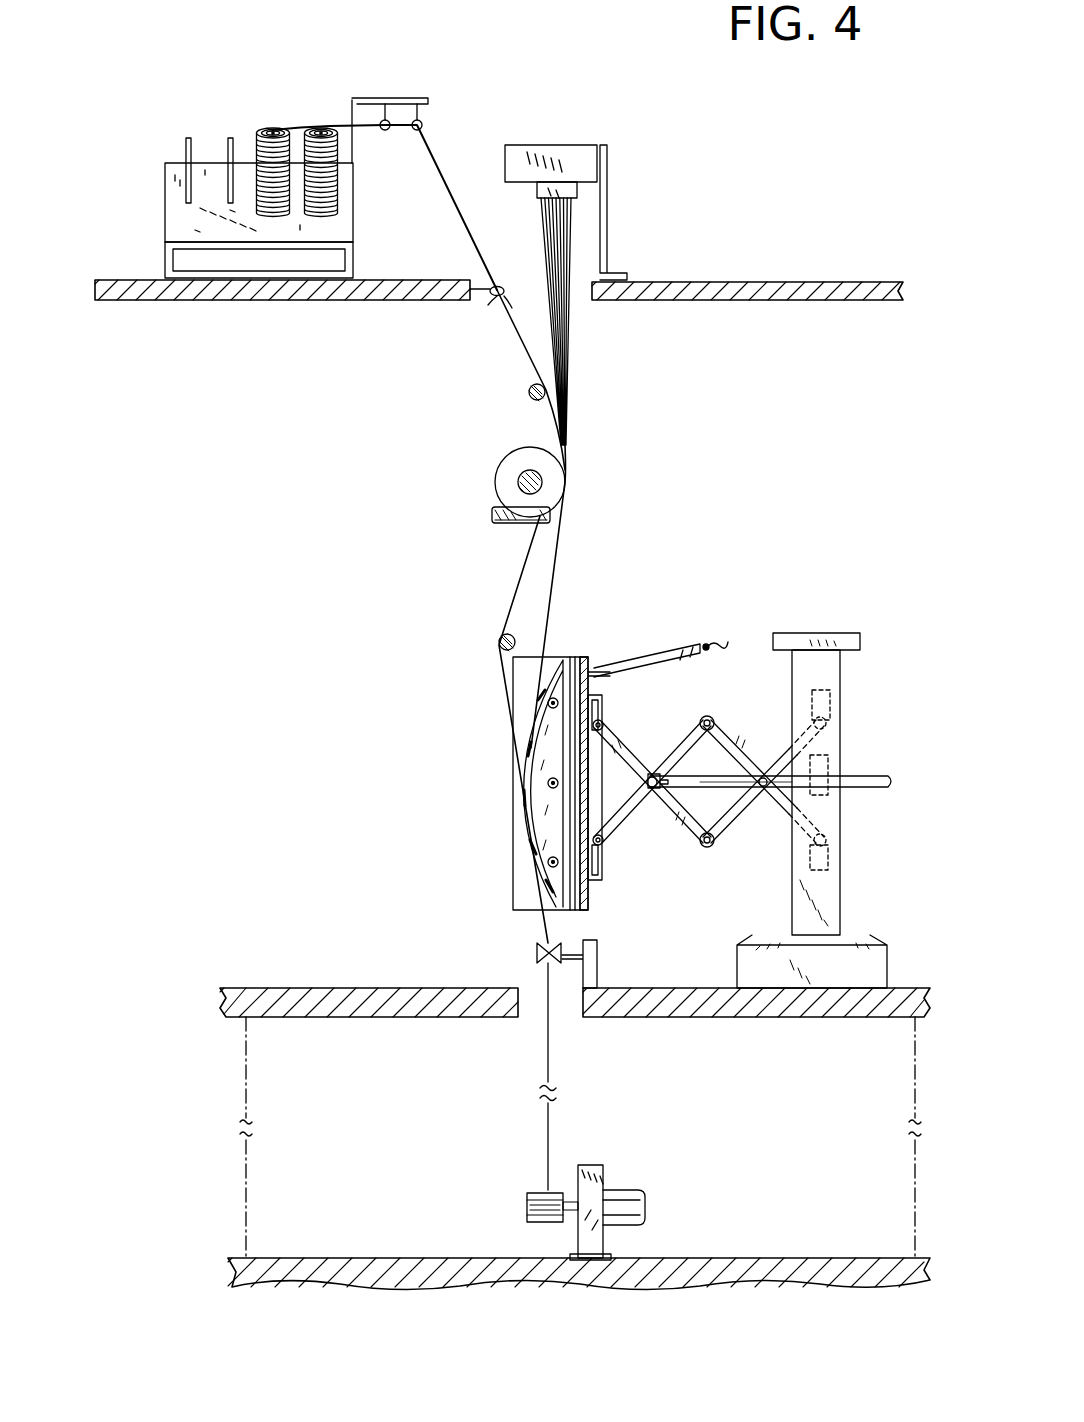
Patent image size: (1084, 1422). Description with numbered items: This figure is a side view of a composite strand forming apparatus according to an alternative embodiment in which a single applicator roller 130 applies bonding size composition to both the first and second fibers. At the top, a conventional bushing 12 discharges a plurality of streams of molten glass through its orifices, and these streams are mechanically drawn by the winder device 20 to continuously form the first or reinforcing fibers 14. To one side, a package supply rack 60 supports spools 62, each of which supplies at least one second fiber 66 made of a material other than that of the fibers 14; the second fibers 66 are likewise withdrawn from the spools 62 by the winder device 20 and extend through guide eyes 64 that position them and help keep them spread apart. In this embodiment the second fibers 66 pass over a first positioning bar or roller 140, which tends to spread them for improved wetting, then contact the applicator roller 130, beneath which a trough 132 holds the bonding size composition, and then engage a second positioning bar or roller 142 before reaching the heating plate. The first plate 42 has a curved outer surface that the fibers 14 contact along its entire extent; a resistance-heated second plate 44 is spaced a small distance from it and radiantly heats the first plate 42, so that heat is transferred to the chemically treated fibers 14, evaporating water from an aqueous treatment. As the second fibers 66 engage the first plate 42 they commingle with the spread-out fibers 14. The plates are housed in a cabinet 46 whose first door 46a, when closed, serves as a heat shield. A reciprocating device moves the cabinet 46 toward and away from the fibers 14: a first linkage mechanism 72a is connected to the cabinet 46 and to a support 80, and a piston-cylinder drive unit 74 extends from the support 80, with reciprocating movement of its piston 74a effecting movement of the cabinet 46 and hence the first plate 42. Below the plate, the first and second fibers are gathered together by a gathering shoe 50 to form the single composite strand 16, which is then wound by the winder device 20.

The bushing 12 is at (563, 148).
The first or reinforcing fibers 14 is at (555, 568).
The glass/polymer composite strand 16 is at (552, 1050).
The winder device 20 is at (516, 1201).
The first plate 42 is at (528, 745).
The second plate 44 is at (575, 665).
The cabinet 46 is at (590, 900).
The first door 46a is at (513, 890).
The gathering shoe 50 is at (537, 950).
The package supply rack 60 is at (205, 162).
The spools 62 is at (312, 132).
The guide eyes 64 is at (387, 118).
The second fibers 66 is at (452, 200).
The first linkage mechanism 72a is at (672, 745).
The piston-cylinder drive unit 74 is at (862, 788).
The piston 74a is at (745, 800).
The support 80 is at (840, 885).
The applicator roller 130 is at (495, 480).
The trough 132 is at (492, 510).
The first positioning bar or roller 140 is at (528, 392).
The second positioning bar or roller 142 is at (497, 640).